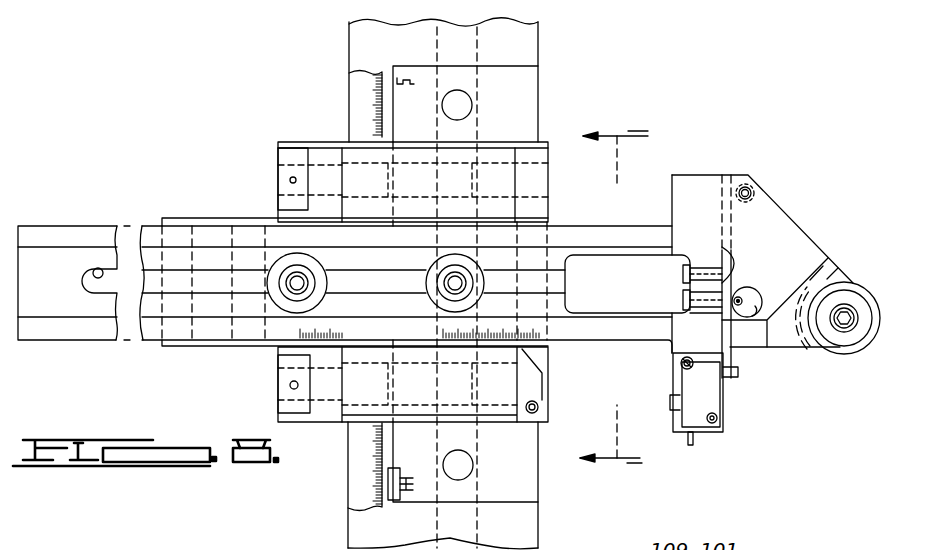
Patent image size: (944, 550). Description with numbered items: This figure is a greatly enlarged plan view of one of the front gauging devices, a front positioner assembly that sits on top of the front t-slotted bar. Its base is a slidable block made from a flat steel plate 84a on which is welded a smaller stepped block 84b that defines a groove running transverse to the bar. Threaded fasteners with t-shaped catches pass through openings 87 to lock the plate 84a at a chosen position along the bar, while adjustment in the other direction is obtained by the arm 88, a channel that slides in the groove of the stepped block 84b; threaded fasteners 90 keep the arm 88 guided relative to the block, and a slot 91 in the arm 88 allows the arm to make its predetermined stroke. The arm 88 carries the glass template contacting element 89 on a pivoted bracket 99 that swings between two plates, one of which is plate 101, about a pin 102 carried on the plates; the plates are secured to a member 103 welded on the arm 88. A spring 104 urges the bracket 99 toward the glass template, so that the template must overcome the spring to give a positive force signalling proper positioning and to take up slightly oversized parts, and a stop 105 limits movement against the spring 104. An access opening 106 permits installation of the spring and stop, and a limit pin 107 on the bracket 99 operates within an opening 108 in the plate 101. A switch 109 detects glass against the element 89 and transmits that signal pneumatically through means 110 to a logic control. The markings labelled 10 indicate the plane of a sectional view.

The section line indicator 10 is at (614, 297).
The flat steel plate 84a is at (512, 72).
The stepped block 84b is at (540, 212).
The openings 87 is at (470, 97).
The arm 88 is at (573, 343).
The glass template contacting element 89 is at (853, 346).
The threaded fasteners 90 is at (290, 290).
The slot 91 is at (98, 268).
The pivoted bracket 99 is at (793, 337).
The plate 101 is at (770, 210).
The pin 102 is at (748, 185).
The member 103 is at (681, 364).
The spring 104 is at (742, 290).
The stop 105 is at (736, 278).
The access opening 106 is at (586, 258).
The limit pin 107 is at (806, 280).
The opening 108 is at (765, 322).
The switch 109 is at (725, 375).
The pneumatic signal means 110 is at (682, 433).